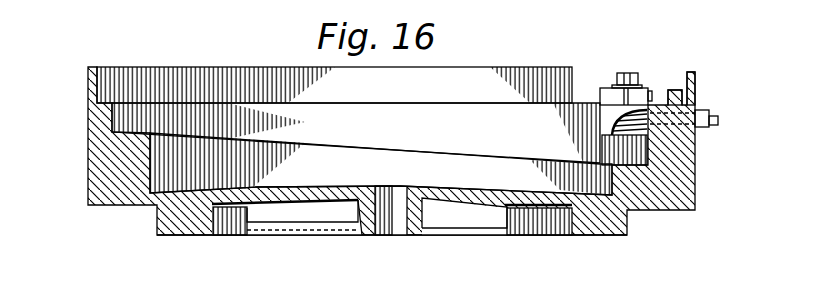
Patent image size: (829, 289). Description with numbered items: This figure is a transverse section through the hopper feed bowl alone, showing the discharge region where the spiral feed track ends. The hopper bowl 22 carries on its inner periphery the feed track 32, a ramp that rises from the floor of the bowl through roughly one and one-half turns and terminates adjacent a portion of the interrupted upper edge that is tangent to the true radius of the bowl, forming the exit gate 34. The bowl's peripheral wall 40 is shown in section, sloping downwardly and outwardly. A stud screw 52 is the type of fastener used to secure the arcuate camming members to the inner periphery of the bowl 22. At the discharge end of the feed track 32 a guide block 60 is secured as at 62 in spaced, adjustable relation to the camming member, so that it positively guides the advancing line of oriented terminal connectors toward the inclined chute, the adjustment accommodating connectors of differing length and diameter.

The hopper bowl 22 is at (105, 163).
The feed track 32 is at (356, 103).
The peripheral wall 40 is at (92, 95).
The exit gate 34 is at (655, 94).
The stud screw 52 is at (715, 117).
The guide block 60 is at (588, 97).
The securing means for guide block 62 is at (627, 73).